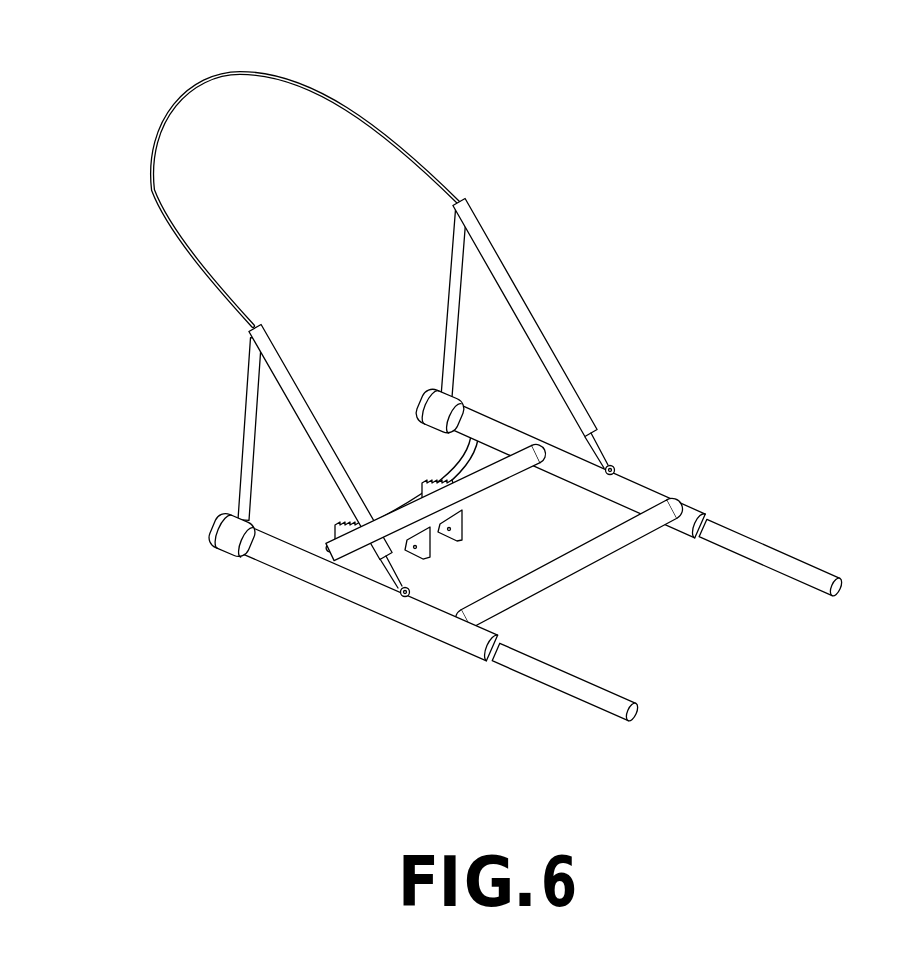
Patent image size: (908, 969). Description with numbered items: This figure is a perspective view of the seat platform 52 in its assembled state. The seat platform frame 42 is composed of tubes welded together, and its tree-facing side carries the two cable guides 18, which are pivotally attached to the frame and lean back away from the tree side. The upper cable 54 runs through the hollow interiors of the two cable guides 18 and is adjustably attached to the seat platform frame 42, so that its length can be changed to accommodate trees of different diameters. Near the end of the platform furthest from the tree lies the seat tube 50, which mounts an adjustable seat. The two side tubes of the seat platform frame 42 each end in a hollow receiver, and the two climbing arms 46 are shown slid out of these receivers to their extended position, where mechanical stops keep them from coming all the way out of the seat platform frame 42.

The cable guide 18 is at (533, 337).
The seat platform frame 42 is at (622, 490).
The climbing arm 46 is at (750, 550).
The seat tube 50 is at (578, 573).
The seat platform 52 is at (498, 463).
The upper cable 54 is at (158, 118).